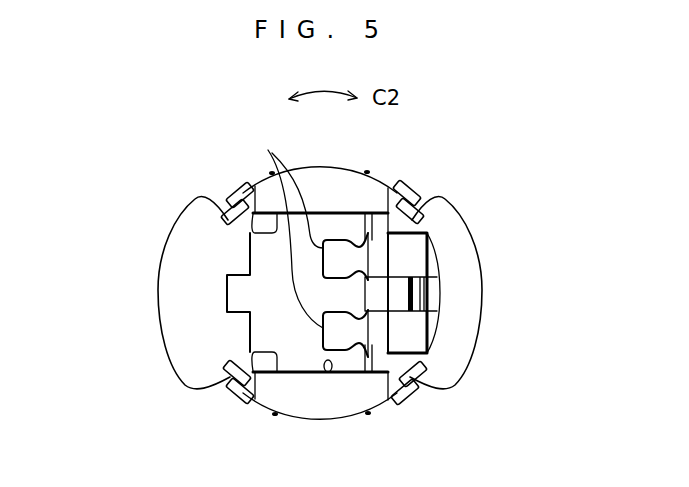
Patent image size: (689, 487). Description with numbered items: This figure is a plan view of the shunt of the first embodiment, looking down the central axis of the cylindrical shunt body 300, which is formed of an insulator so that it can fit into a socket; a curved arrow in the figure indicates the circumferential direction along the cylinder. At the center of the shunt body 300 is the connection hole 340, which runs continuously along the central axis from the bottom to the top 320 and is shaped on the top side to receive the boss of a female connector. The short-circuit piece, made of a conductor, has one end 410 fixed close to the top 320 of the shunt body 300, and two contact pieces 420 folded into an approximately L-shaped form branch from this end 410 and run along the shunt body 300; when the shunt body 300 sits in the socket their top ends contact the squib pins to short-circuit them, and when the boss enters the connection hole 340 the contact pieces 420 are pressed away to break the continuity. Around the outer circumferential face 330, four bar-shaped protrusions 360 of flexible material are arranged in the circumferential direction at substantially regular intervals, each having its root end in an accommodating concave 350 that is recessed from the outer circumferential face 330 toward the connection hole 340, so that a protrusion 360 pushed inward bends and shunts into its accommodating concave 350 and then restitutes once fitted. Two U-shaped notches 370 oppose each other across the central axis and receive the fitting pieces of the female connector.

The shunt body 300 is at (94, 154).
The top 320 is at (467, 322).
The outer circumferential face 330 is at (350, 418).
The connection hole 340 is at (328, 372).
The accommodating concave 350 is at (238, 202).
The protrusion 360 is at (232, 192).
The U-shaped notch 370 is at (334, 177).
The one end of the short-circuit piece 410 is at (413, 255).
The contact piece 420 is at (276, 226).